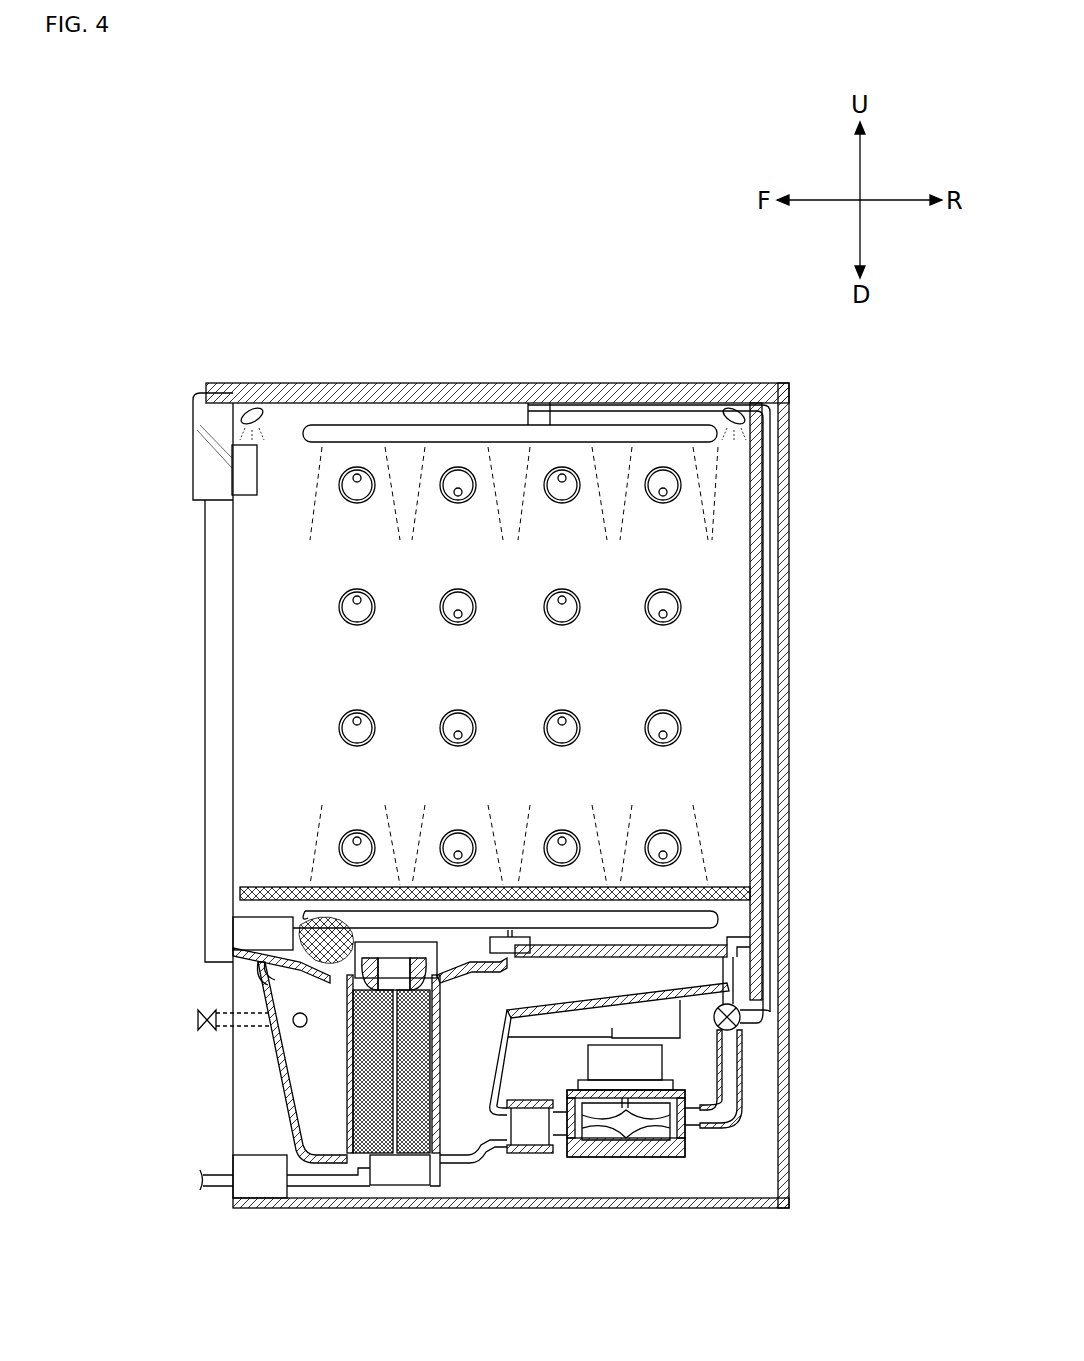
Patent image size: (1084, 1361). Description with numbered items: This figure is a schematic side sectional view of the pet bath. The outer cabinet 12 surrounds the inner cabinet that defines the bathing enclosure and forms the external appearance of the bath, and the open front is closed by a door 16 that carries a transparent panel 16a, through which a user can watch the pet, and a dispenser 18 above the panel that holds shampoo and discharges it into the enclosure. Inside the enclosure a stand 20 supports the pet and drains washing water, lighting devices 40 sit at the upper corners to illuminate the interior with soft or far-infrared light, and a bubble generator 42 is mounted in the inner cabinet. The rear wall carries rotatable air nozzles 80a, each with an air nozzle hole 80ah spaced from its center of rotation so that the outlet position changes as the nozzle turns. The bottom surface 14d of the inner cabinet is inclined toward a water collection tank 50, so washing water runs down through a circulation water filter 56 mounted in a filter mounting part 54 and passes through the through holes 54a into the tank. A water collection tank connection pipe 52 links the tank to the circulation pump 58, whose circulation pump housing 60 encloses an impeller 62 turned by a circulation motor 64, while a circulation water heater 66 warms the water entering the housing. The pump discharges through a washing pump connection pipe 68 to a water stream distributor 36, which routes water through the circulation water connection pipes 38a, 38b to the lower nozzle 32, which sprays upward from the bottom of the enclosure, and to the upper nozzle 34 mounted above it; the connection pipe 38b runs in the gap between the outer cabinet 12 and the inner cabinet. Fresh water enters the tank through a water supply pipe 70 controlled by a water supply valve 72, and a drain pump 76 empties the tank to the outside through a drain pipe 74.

The outer cabinet 12 is at (400, 385).
The bottom surface 14d is at (783, 968).
The door 16 is at (186, 447).
The transparent panel 16a is at (220, 604).
The dispenser 18 is at (238, 467).
The stand 20 is at (745, 892).
The lower nozzle 32 is at (712, 918).
The upper nozzle 34 is at (552, 437).
The water stream distributor 36 is at (742, 1012).
The circulation water connection pipe 38a is at (745, 937).
The circulation water connection pipe 38b is at (767, 878).
The lighting device 40 is at (248, 405).
The bubble generator 42 is at (243, 936).
The water collection tank 50 is at (292, 1080).
The water collection tank connection pipe 52 is at (522, 1150).
The filter mounting part 54 is at (355, 1108).
The through hole 54a is at (400, 1185).
The circulation water filter 56 is at (440, 1100).
The circulation pump 58 is at (658, 1164).
The circulation pump housing 60 is at (685, 1147).
The impeller 62 is at (735, 1133).
The circulation motor 64 is at (652, 1057).
The circulation water heater 66 is at (613, 1146).
The washing pump connection pipe 68 is at (720, 1125).
The water supply pipe 70 is at (245, 1037).
The water supply valve 72 is at (196, 1020).
The drain pipe 74 is at (322, 1185).
The drain pump 76 is at (258, 1190).
The air nozzle 80a is at (338, 503).
The air nozzle hole 80ah is at (358, 482).